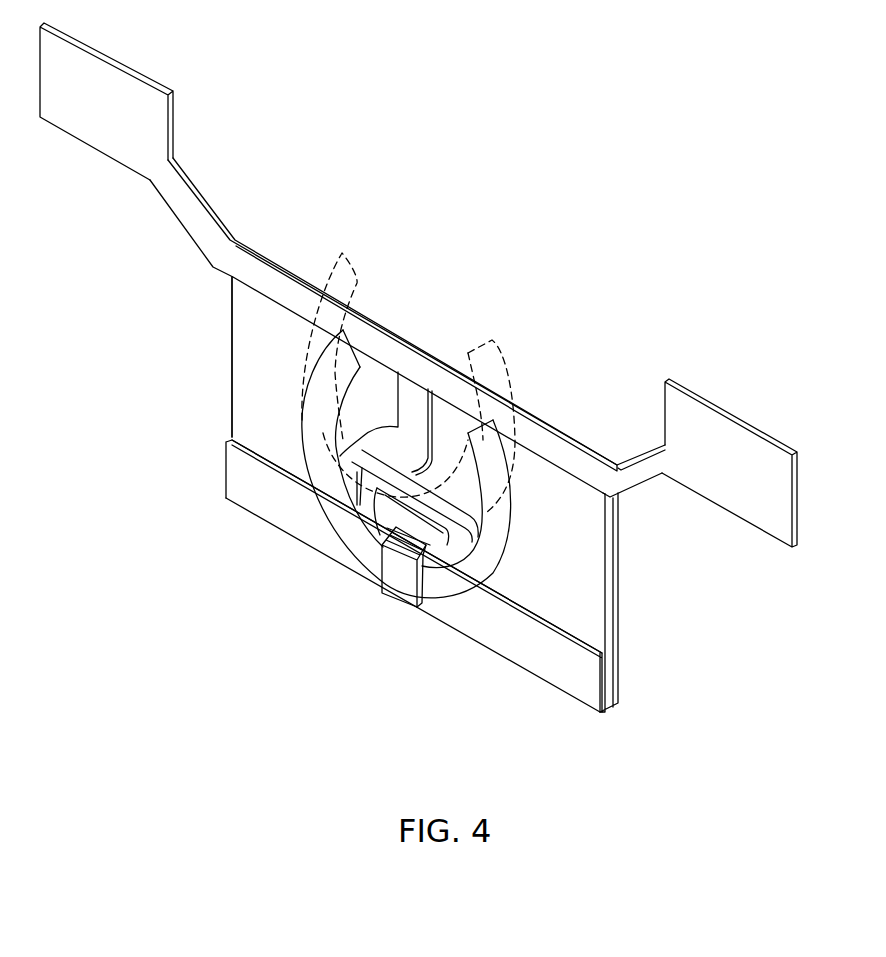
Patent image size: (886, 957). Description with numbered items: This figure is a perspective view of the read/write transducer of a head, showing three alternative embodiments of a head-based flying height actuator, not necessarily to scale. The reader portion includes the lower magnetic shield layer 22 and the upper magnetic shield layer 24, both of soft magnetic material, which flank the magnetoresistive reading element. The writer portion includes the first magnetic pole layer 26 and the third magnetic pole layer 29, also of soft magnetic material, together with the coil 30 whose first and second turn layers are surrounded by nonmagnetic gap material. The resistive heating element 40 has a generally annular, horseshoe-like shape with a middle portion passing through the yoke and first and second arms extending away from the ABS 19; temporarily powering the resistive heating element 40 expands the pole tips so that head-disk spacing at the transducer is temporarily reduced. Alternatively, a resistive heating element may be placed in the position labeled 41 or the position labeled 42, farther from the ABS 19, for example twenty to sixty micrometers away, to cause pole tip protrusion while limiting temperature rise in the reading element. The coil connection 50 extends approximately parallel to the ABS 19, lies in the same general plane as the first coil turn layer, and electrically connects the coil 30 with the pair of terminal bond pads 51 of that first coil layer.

The terminal bond pads 51 is at (128, 70).
The coil connection 50 is at (400, 340).
The lower (S1) magnetic shield layer 22 is at (620, 572).
The upper (S2) magnetic shield layer 24 is at (572, 586).
The first magnetic pole layer 26 is at (492, 625).
The air-bearing surface (ABS) 19 is at (563, 690).
The resistive heating element 40 is at (308, 427).
The alternative resistive heating element position 41 is at (472, 382).
The alternative resistive heating element position 42 is at (487, 358).
The coil 30 is at (455, 537).
The third magnetic pole layer 29 is at (398, 580).